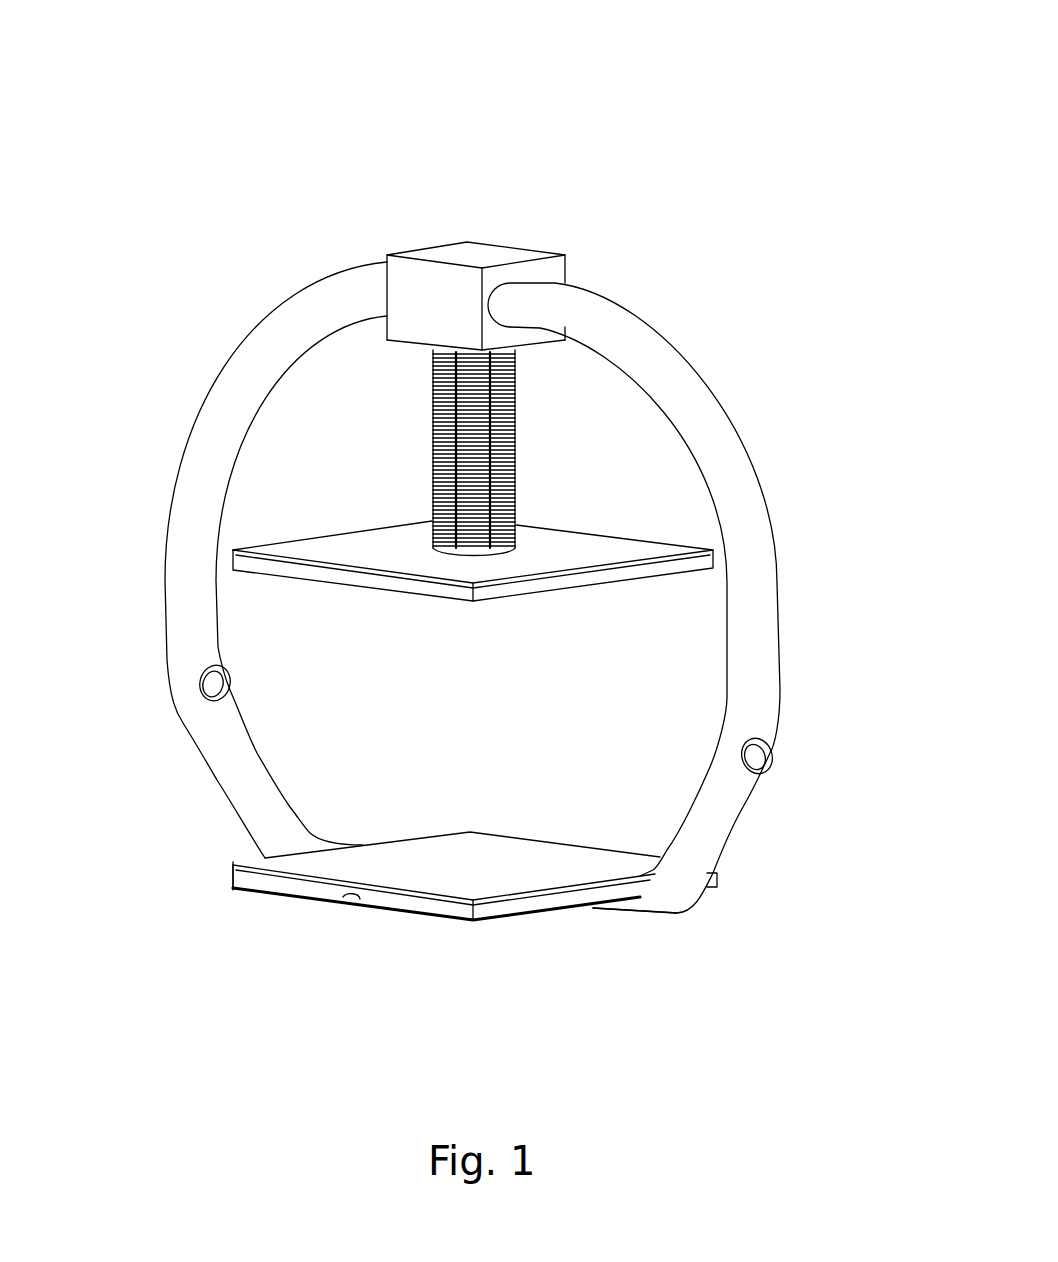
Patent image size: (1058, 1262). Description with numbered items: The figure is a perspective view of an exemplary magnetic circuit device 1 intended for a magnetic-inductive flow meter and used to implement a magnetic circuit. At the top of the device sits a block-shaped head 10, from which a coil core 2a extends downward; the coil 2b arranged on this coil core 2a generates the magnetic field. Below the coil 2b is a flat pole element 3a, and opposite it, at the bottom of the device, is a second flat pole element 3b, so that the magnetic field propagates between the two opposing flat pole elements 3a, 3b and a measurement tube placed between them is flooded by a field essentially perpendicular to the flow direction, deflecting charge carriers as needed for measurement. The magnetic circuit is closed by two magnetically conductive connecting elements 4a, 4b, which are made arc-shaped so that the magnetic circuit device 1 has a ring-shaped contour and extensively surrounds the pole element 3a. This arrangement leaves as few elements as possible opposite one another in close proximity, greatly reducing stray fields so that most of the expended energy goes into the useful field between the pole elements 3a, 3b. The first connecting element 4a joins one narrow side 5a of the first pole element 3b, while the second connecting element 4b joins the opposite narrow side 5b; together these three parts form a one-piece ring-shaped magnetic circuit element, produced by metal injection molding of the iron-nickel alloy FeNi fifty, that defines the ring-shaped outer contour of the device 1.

The magnetic circuit device 1 is at (622, 222).
The head / knob 10 is at (413, 302).
The coil core 2a is at (517, 453).
The coil 2b is at (517, 453).
The flat pole element 3a is at (568, 560).
The flat pole element 3b is at (405, 898).
The first magnetically conductive connecting element 4a is at (190, 525).
The second magnetically conductive connecting element 4b is at (735, 512).
The narrow side 5a is at (200, 888).
The narrow side 5b is at (610, 912).